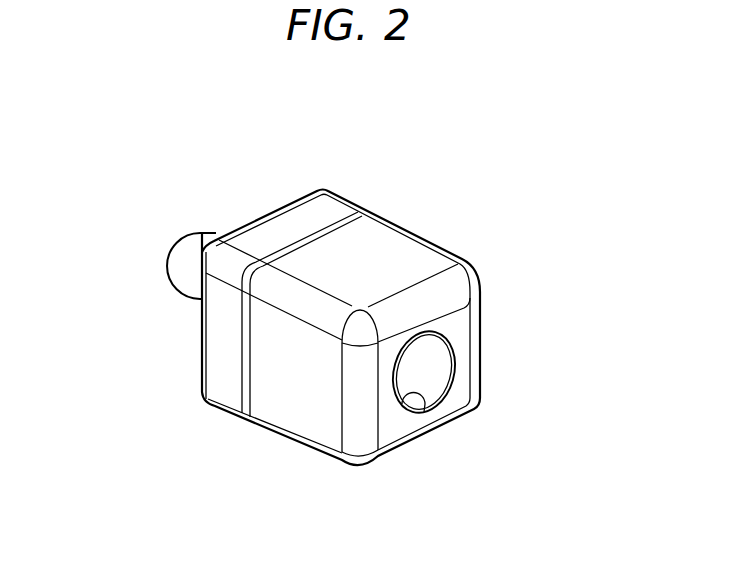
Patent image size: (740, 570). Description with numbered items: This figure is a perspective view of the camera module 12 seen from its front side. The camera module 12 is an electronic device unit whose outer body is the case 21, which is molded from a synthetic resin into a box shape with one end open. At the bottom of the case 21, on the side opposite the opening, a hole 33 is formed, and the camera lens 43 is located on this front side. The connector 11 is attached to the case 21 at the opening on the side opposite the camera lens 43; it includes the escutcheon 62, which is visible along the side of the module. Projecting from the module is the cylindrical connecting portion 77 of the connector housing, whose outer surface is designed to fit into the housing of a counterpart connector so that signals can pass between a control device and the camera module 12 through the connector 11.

The connector 11 is at (331, 191).
The camera module 12 is at (462, 259).
The case 21 is at (390, 244).
The hole 33 is at (424, 410).
The camera lens 43 is at (437, 364).
The escutcheon 62 is at (200, 372).
The connecting portion 77 is at (197, 238).